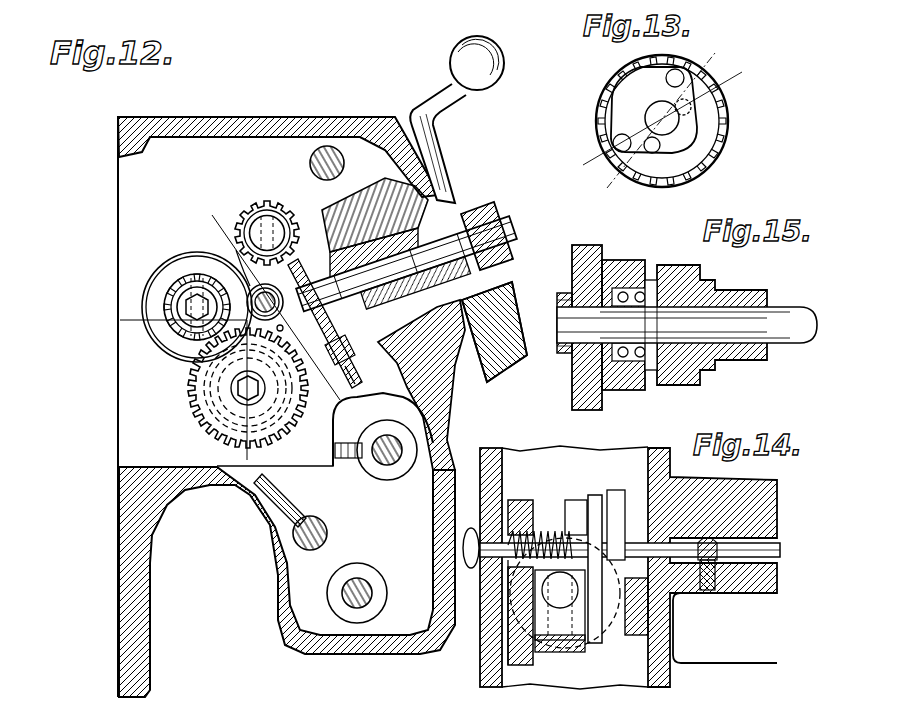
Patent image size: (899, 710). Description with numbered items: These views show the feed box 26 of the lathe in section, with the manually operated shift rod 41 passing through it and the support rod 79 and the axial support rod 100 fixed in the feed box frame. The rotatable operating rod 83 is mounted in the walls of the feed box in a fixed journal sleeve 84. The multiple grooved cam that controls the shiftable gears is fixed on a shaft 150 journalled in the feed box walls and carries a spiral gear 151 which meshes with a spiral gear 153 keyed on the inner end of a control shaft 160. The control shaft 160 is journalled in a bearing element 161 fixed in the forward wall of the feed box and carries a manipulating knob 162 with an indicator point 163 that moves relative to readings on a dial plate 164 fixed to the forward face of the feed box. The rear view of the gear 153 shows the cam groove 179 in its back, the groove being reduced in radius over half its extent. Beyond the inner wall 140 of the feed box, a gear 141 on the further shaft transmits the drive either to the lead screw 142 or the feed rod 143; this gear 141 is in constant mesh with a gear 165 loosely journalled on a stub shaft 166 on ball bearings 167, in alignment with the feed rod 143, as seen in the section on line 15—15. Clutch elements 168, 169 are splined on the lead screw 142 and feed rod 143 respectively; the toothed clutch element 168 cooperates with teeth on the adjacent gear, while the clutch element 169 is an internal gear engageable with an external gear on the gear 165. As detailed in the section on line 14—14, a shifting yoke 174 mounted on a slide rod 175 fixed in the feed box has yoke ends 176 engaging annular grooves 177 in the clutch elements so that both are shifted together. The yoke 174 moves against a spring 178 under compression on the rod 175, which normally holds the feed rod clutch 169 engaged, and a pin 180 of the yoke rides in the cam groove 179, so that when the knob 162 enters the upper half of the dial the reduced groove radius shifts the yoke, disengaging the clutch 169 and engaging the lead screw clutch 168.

In FIG. 12, the feed box 26 is at (243, 118).
In FIG. 12, the manually operated shift rod 41 is at (312, 158).
In FIG. 12, the cam shaft 150 is at (262, 222).
In FIG. 12, the spiral gear 151 is at (270, 216).
In FIG. 12, the section line 14— 14 is at (233, 210).
In FIG. 12, the spring 178 is at (242, 272).
In FIG. 14, the spring 178 is at (538, 535).
In FIG. 12, the yoke ends 176 is at (180, 270).
In FIG. 12, the lead screw 142 is at (192, 300).
In FIG. 12, the section line 15— 15 is at (121, 320).
In FIG. 12, the clutch element 168 is at (183, 340).
In FIG. 12, the feed rod 143 is at (236, 385).
In FIG. 15, the feed rod 143 is at (787, 310).
In FIG. 14, the feed rod 143 is at (621, 559).
In FIG. 12, the clutch element 169 is at (200, 407).
In FIG. 14, the clutch element 169 is at (557, 657).
In FIG. 12, the slide rod 175 is at (298, 278).
In FIG. 14, the slide rod 175 is at (608, 545).
In FIG. 12, the bearing element 161 is at (376, 235).
In FIG. 12, the manipulating knob 162 is at (446, 148).
In FIG. 12, the indicator point 163 is at (478, 260).
In FIG. 12, the dial plate 164 is at (508, 320).
In FIG. 12, the control shaft 160 is at (378, 328).
In FIG. 13, the control shaft 160 is at (658, 113).
In FIG. 12, the pin 180 is at (343, 345).
In FIG. 14, the pin 180 is at (592, 643).
In FIG. 12, the cam groove 179 is at (352, 378).
In FIG. 13, the cam groove 179 is at (607, 118).
In FIG. 12, the fixed journal sleeve 84 is at (392, 423).
In FIG. 12, the rotatable operating rod 83 is at (386, 462).
In FIG. 12, the support rod 79 is at (328, 531).
In FIG. 12, the axial support rod 100 is at (370, 583).
In FIG. 13, the spiral gear 153 is at (607, 92).
In FIG. 14, the spiral gear 153 is at (617, 632).
In FIG. 15, the gear 165 is at (622, 260).
In FIG. 14, the gear 165 is at (508, 661).
In FIG. 15, the stub shaft 166 is at (584, 327).
In FIG. 15, the annular grooves 177 is at (713, 353).
In FIG. 15, the ball bearings 167 is at (647, 387).
In FIG. 14, the gear 141 is at (520, 500).
In FIG. 14, the shifting yoke 174 is at (595, 500).
In FIG. 14, the inner wall 140 is at (480, 640).